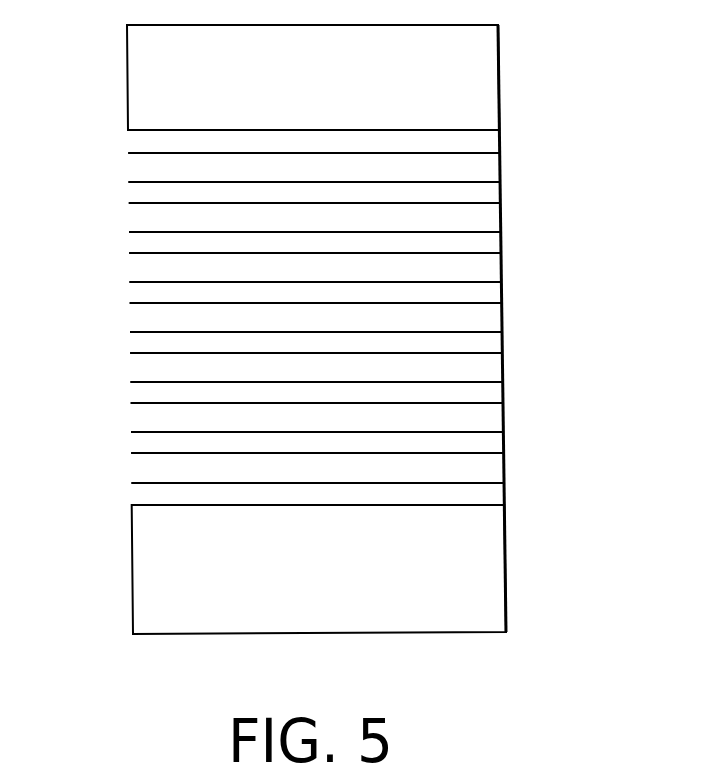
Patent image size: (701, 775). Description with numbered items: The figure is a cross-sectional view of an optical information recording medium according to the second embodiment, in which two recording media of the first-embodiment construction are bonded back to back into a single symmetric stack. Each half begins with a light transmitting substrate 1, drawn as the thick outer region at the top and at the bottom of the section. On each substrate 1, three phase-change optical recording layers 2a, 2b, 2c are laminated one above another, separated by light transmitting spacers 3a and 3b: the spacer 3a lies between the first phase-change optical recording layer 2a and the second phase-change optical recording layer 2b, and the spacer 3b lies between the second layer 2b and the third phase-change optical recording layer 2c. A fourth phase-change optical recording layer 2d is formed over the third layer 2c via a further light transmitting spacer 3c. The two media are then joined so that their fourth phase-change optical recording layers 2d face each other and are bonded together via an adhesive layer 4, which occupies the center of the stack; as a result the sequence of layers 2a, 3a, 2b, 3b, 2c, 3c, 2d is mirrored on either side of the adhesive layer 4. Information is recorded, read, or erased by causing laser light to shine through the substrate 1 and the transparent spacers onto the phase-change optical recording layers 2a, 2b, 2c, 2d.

The light transmitting substrate 1 is at (483, 61).
The first phase-change optical recording layer 2a is at (483, 139).
The second phase-change optical recording layer 2b is at (483, 189).
The third phase-change optical recording layer 2c is at (484, 239).
The fourth phase-change optical recording layer 2d is at (484, 289).
The light transmitting spacer 3a is at (142, 170).
The light transmitting spacer 3b is at (142, 220).
The light transmitting spacer 3c is at (142, 270).
The adhesive layer 4 is at (142, 320).